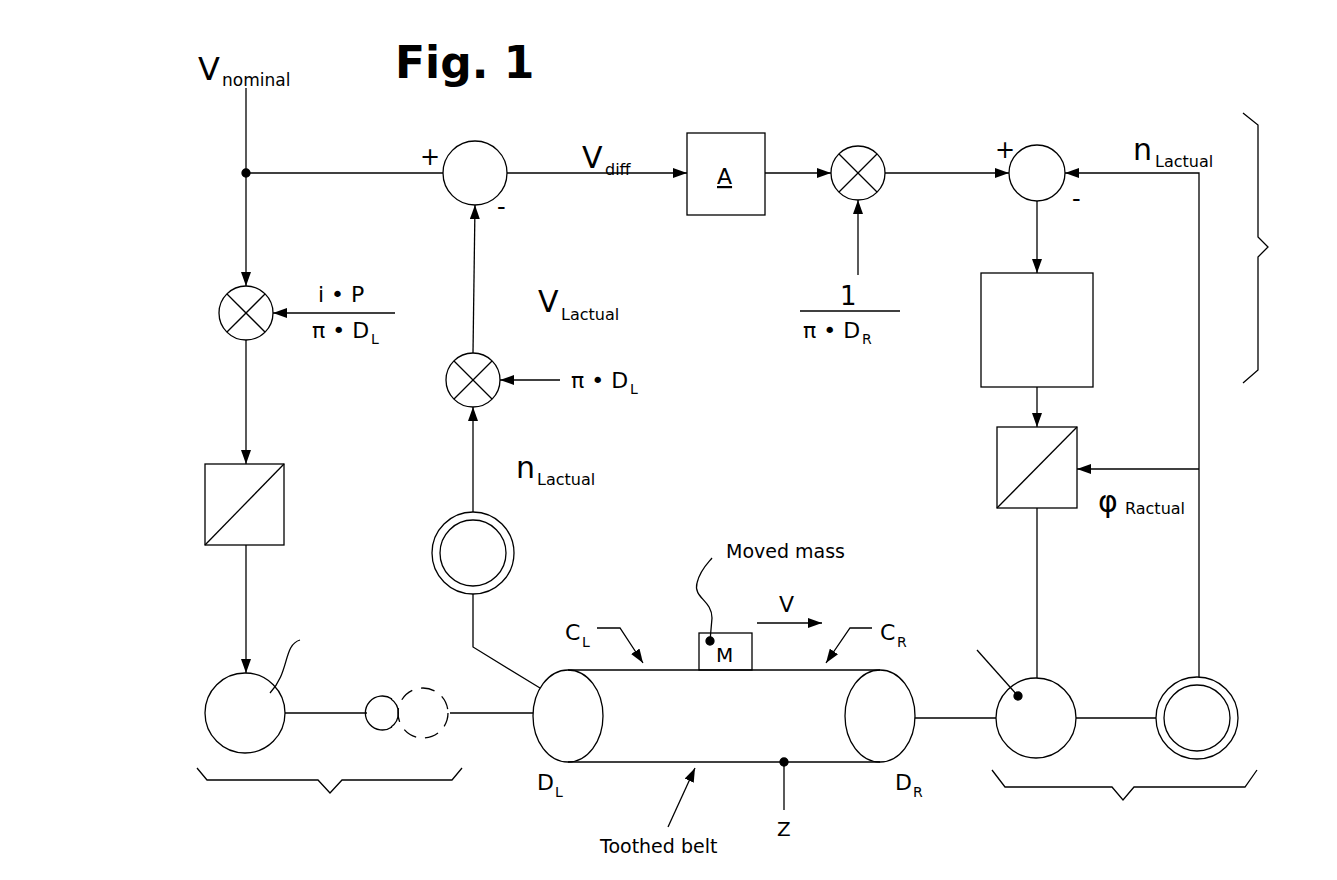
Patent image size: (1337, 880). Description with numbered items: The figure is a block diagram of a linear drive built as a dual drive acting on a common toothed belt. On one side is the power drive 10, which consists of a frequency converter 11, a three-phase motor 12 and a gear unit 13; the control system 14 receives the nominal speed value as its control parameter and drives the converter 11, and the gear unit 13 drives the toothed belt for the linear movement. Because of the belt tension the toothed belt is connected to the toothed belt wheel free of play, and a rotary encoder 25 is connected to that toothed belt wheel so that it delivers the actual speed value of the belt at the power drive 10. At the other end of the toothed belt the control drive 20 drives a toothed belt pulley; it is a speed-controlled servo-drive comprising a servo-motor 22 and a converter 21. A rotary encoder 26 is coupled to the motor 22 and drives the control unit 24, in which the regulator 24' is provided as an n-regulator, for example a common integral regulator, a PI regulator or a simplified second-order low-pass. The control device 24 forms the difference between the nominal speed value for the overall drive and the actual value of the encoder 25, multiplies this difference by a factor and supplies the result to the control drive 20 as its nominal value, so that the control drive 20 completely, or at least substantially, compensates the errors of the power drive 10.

The power drive 10 is at (329, 812).
The frequency converter 11 is at (218, 484).
The three-phase motor 12 is at (217, 713).
The gear unit 13 is at (418, 699).
The control system 14 is at (218, 288).
The control drive 20 is at (1124, 815).
The converter 21 is at (1068, 453).
The servo-motor 22 is at (1056, 738).
The control unit 24 is at (1273, 248).
The regulator 24' is at (1068, 296).
The rotary encoder 25 is at (485, 533).
The rotary encoder 26 is at (1232, 711).